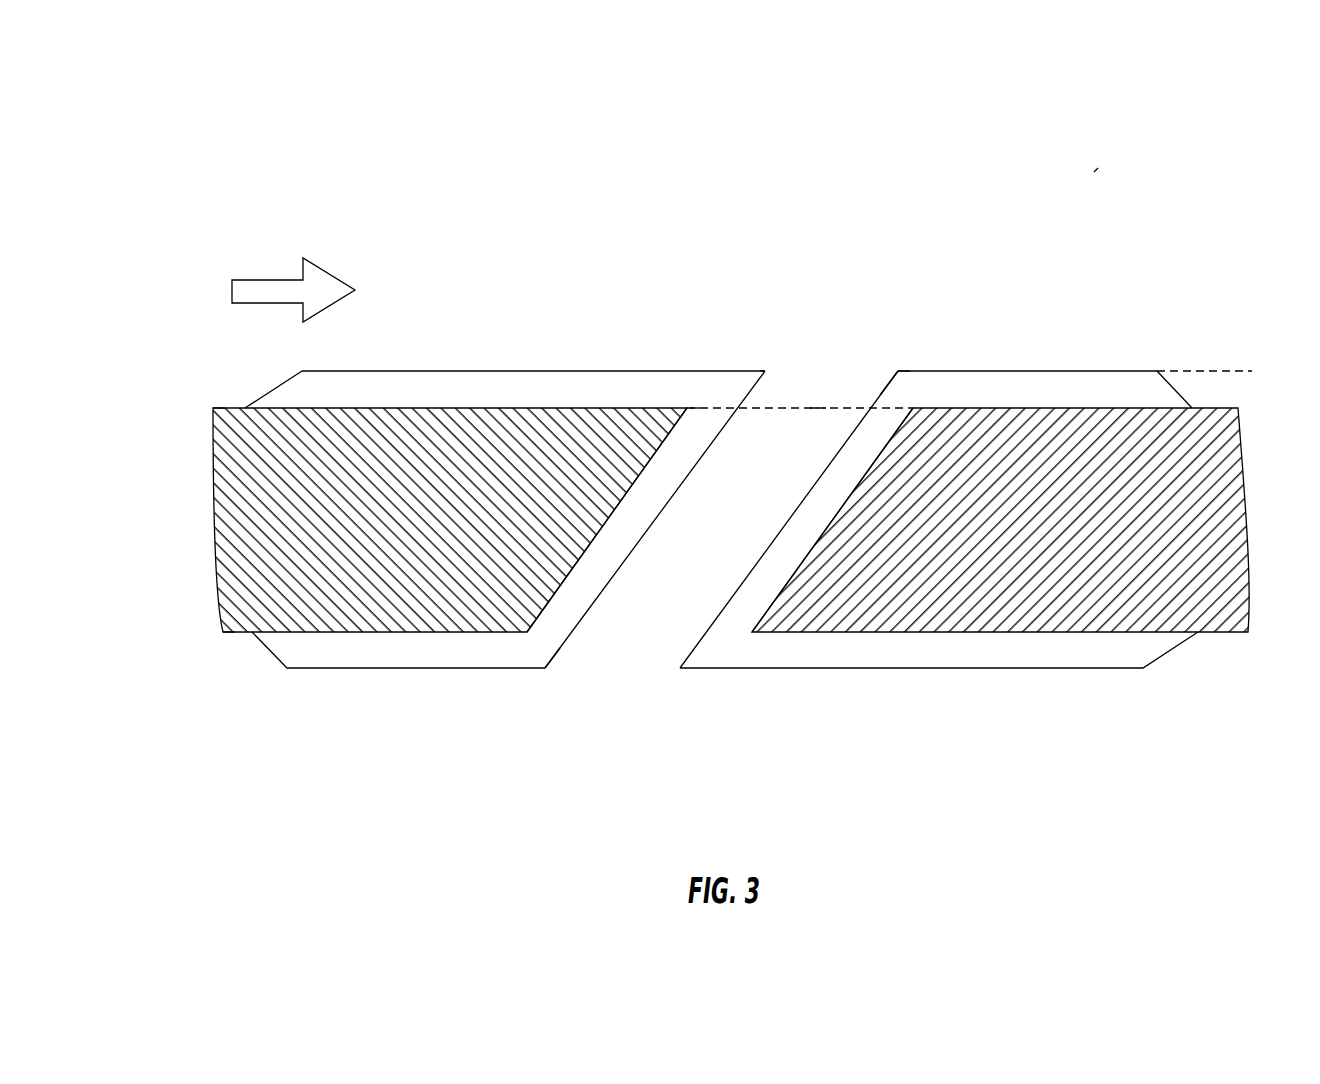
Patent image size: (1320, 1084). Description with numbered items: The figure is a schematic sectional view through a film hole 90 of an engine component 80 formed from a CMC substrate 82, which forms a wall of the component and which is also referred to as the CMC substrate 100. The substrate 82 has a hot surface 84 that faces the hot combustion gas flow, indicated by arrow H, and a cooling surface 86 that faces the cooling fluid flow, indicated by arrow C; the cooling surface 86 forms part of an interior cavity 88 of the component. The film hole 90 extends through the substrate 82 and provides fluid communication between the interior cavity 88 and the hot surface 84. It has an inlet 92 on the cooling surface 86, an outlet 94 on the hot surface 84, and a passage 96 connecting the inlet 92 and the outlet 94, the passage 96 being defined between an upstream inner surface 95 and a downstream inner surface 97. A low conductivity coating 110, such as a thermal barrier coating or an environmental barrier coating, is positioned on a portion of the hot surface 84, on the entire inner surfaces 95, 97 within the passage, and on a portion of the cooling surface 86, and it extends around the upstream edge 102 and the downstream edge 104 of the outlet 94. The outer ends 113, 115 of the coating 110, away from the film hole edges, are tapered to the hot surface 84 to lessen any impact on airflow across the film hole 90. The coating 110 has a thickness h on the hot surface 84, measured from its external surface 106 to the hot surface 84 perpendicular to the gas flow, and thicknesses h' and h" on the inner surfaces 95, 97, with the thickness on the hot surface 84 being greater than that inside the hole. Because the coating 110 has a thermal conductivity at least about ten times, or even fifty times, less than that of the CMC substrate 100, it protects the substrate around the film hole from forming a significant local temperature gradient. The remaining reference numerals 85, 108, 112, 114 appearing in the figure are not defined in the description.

The engine component 80 is at (1098, 168).
The substrate 82 is at (233, 512).
The hot surface 84 is at (222, 407).
The gap centerline 85 is at (818, 408).
The cooling surface 86 is at (229, 635).
The interior cavity 88 is at (439, 774).
The film hole 90 is at (796, 286).
The inlet 92 is at (653, 697).
The outlet 94 is at (896, 338).
The upstream inner surface 95 is at (573, 568).
The passage 96 is at (730, 538).
The downstream inner surface 97 is at (880, 456).
The CMC substrate 100 is at (888, 658).
The upstream edge 102 is at (687, 408).
The downstream edge 104 is at (913, 407).
The external surface 106 is at (1130, 371).
The flow direction arrow 108 is at (280, 286).
The low conductivity coating 110 is at (636, 371).
The coating edge 112 is at (764, 371).
The outer end 113 is at (276, 385).
The coating corner 114 is at (898, 371).
The outer end 115 is at (1217, 407).